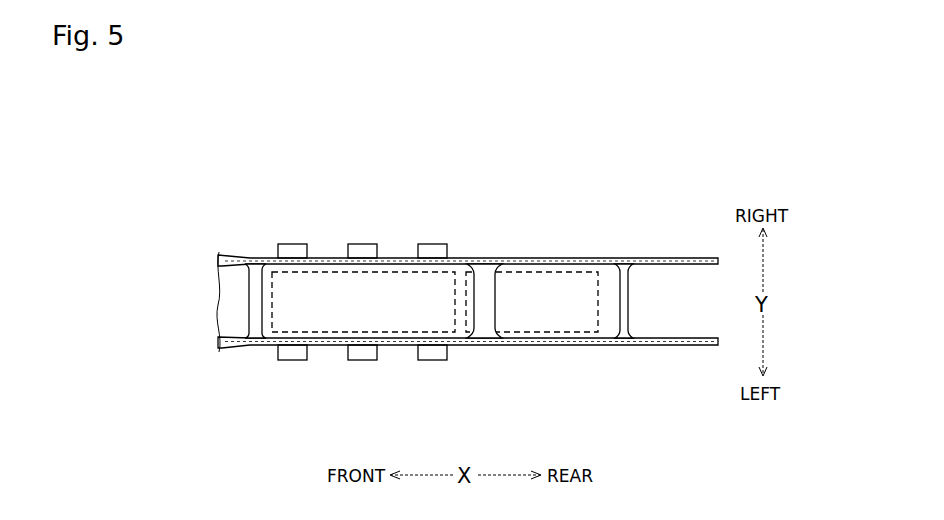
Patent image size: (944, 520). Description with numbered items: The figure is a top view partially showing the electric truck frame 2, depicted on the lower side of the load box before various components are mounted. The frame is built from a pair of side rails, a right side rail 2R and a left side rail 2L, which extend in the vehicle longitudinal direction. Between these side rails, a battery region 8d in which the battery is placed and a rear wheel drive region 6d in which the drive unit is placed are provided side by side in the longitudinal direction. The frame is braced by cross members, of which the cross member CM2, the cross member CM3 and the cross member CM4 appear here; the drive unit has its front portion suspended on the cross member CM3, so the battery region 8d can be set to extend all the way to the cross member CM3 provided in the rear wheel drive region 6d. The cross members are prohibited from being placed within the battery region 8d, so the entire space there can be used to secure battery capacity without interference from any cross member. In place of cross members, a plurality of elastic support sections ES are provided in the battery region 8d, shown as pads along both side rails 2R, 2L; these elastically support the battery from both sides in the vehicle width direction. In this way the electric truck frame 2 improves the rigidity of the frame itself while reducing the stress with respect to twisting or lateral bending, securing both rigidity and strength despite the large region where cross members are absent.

The electric truck frame 2 is at (216, 223).
The right side rail 2R is at (217, 259).
The left side rail 2L is at (219, 349).
The battery region 8d is at (271, 268).
The rear wheel drive region 6d is at (524, 268).
The elastic support sections ES is at (427, 243).
The cross member CM2 is at (254, 333).
The cross member CM3 is at (484, 322).
The cross member CM4 is at (624, 330).